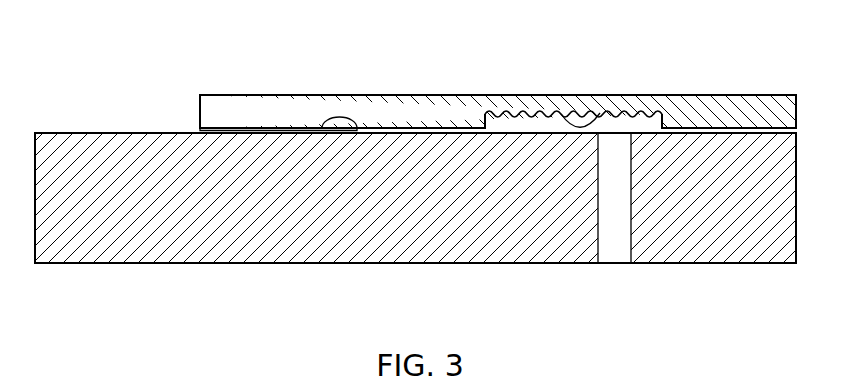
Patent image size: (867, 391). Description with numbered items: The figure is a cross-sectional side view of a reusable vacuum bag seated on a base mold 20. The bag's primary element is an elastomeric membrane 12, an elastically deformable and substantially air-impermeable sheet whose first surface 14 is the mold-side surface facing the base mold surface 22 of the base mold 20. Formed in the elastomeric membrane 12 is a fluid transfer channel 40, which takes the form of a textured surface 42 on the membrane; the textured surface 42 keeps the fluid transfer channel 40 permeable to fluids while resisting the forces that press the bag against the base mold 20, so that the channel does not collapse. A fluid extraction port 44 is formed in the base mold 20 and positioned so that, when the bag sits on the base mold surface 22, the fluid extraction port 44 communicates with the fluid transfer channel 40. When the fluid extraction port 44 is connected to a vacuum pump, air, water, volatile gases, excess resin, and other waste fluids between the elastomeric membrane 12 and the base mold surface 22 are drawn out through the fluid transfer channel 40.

The elastomeric membrane 12 is at (242, 96).
The first surface 14 is at (240, 130).
The base mold 20 is at (505, 243).
The base mold surface 22 is at (323, 128).
The fluid transfer channel 40 is at (490, 105).
The textured surface 42 is at (560, 114).
The fluid extraction port 44 is at (617, 245).